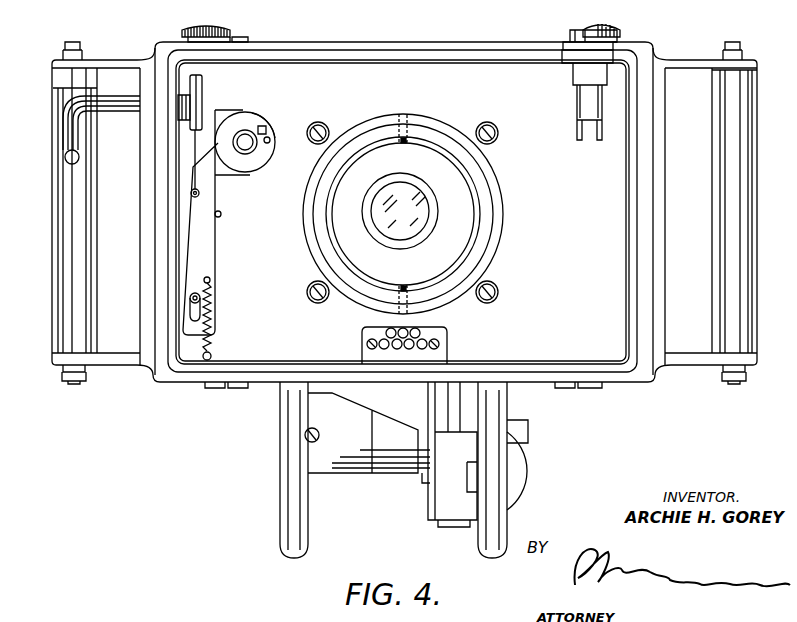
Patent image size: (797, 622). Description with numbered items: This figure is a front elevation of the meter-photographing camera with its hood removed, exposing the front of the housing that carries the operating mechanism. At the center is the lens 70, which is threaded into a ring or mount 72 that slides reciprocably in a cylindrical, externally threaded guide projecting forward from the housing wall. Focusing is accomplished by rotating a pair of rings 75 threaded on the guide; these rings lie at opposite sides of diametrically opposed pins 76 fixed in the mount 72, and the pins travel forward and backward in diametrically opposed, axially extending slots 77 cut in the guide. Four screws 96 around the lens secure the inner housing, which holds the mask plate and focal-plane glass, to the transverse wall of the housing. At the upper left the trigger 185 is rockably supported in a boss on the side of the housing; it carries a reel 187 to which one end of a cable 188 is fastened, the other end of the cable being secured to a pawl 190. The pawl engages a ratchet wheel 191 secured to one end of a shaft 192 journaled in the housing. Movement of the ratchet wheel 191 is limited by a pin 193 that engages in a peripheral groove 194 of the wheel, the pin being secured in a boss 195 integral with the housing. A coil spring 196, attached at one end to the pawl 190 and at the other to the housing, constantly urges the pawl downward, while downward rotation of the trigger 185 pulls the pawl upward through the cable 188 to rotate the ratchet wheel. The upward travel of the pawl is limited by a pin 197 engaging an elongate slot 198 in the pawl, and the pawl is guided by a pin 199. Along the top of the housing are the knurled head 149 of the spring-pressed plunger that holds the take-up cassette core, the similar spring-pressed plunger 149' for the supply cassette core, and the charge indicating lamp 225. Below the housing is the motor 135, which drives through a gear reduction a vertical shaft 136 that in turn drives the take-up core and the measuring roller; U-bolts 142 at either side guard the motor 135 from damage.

The lens 70 is at (438, 213).
The ring or mount 72 is at (474, 257).
The rings 75 is at (493, 192).
The pins 76 is at (405, 143).
The slots 77 is at (485, 246).
The screws 96 is at (497, 131).
The motor 135 is at (340, 470).
The vertical shaft 136 is at (453, 392).
The U-bolts 142 is at (291, 471).
The knurled head 149 is at (627, 21).
The spring-pressed plunger 149' is at (228, 23).
The trigger 185 is at (115, 108).
The reel 187 is at (203, 86).
The cable 188 is at (198, 177).
The pawl 190 is at (210, 237).
The ratchet wheel 191 is at (241, 122).
The shaft 192 is at (248, 146).
The pin 193 is at (269, 139).
The peripheral groove 194 is at (264, 128).
The boss 195 is at (261, 114).
The coil spring 196 is at (208, 348).
The pin 197 is at (195, 293).
The elongate slot 198 is at (192, 312).
The pin 199 is at (219, 216).
The charge indicating lamp 225 is at (578, 28).